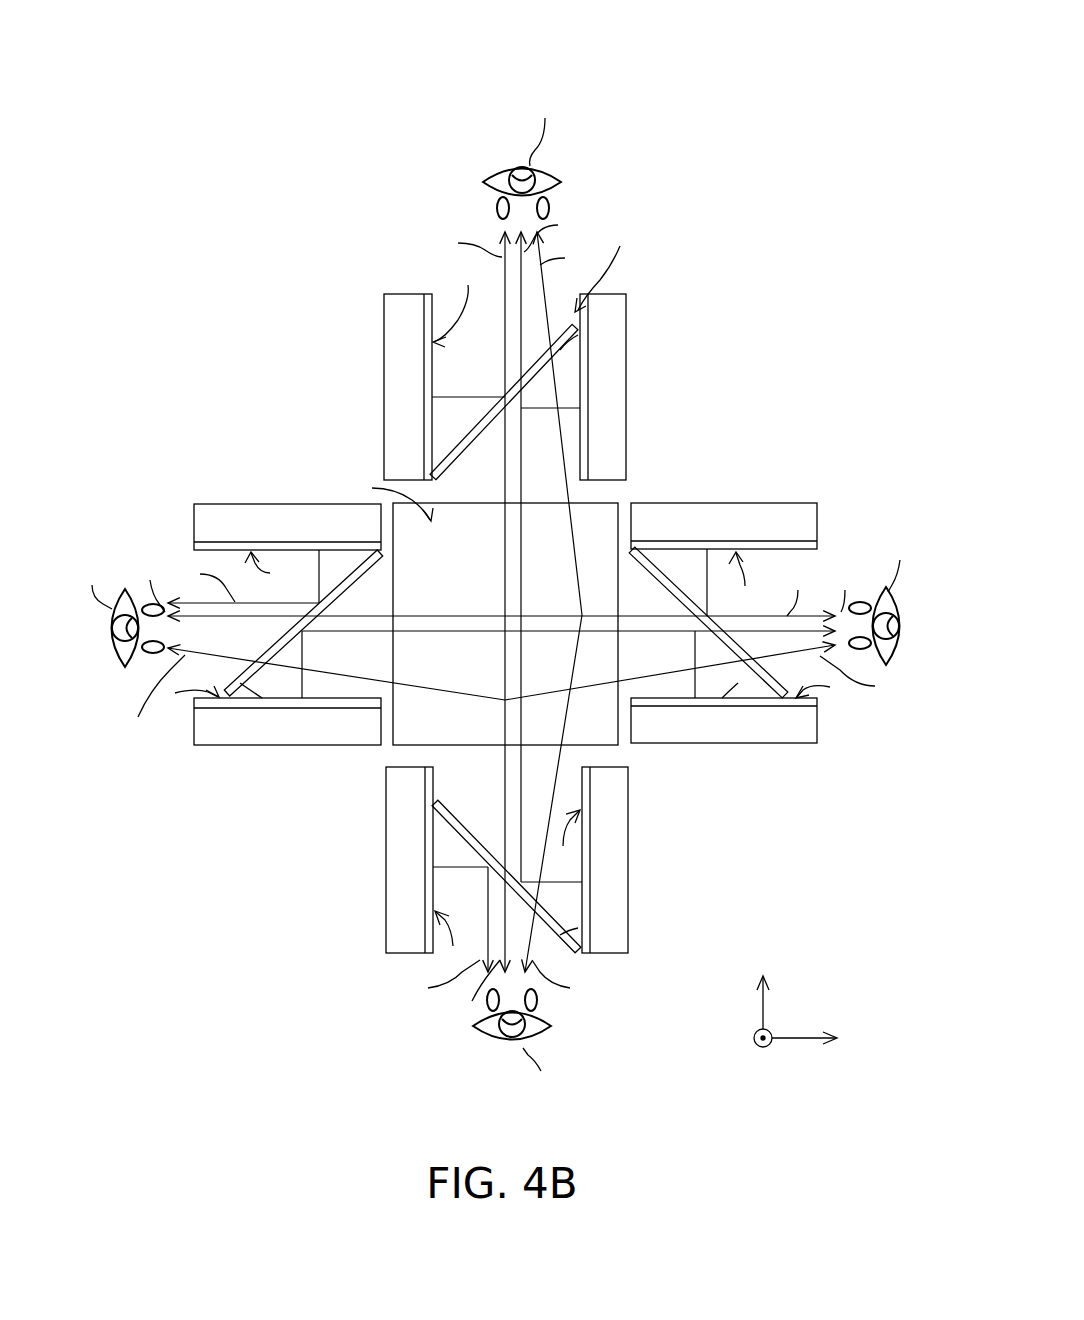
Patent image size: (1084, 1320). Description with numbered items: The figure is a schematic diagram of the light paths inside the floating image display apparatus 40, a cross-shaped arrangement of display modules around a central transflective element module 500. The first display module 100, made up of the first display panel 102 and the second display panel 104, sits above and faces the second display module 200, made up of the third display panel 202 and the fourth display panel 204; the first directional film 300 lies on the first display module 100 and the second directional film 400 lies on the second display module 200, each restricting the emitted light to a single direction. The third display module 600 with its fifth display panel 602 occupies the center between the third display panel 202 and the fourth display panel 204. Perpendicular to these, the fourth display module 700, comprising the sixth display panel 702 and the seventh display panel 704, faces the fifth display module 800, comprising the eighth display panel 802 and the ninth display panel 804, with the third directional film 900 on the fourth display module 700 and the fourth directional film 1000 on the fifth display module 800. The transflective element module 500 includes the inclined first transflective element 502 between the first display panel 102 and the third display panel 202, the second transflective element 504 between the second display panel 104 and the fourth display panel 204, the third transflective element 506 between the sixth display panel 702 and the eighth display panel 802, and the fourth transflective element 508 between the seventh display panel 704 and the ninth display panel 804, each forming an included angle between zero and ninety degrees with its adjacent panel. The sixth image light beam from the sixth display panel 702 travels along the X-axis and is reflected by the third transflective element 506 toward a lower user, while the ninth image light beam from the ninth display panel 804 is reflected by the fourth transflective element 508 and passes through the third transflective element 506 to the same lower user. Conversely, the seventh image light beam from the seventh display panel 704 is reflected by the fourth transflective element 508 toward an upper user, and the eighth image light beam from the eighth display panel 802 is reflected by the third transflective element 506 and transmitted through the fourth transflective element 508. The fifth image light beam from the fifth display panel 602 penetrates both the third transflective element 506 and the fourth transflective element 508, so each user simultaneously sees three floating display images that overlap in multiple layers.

The floating image display apparatus 40 is at (717, 975).
The first display module 100 is at (838, 20).
The first display panel 102 is at (262, 513).
The second display panel 104 is at (748, 513).
The second display module 200 is at (838, 86).
The third display panel 202 is at (247, 730).
The fourth display panel 204 is at (737, 728).
The first directional film 300 is at (822, 546).
The second directional film 400 is at (822, 706).
The transflective element module 500 is at (838, 153).
The first transflective element 502 is at (284, 644).
The second transflective element 504 is at (654, 573).
The third transflective element 506 is at (473, 844).
The fourth transflective element 508 is at (472, 442).
The third display module 600 is at (505, 647).
The fifth display panel 602 is at (460, 733).
The fourth display module 700 is at (838, 285).
The sixth display panel 702 is at (396, 870).
The seventh display panel 704 is at (393, 396).
The fifth display module 800 is at (838, 352).
The eighth display panel 802 is at (620, 860).
The ninth display panel 804 is at (613, 373).
The third directional film 900 is at (426, 298).
The fourth directional film 1000 is at (585, 302).